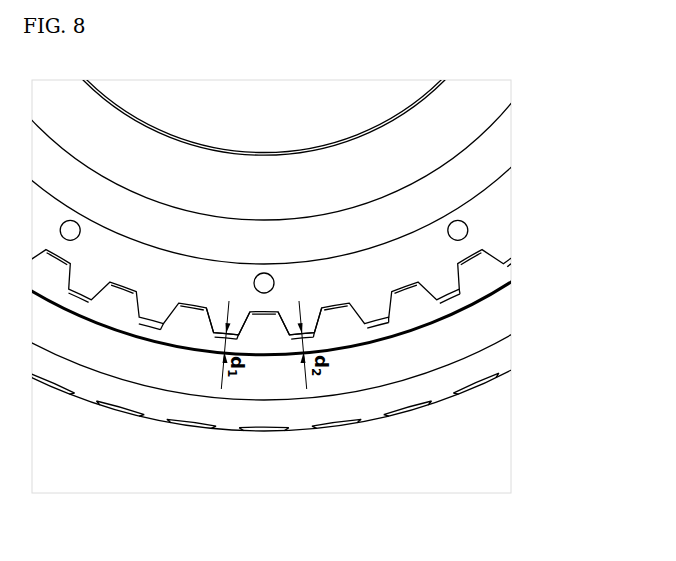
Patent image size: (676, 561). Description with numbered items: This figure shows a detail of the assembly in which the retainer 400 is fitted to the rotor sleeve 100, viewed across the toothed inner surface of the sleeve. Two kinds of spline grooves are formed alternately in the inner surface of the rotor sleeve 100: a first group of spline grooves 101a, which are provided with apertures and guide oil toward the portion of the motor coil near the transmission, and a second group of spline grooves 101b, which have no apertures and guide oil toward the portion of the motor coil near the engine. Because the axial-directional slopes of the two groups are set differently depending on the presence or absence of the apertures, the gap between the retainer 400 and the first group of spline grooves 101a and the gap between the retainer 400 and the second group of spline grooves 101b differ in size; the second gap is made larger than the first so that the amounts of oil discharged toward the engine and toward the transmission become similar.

The retainer 400 is at (492, 225).
The rotor sleeve 100 is at (488, 282).
The first group of spline grooves 101a is at (222, 334).
The second group of spline grooves 101b is at (313, 339).